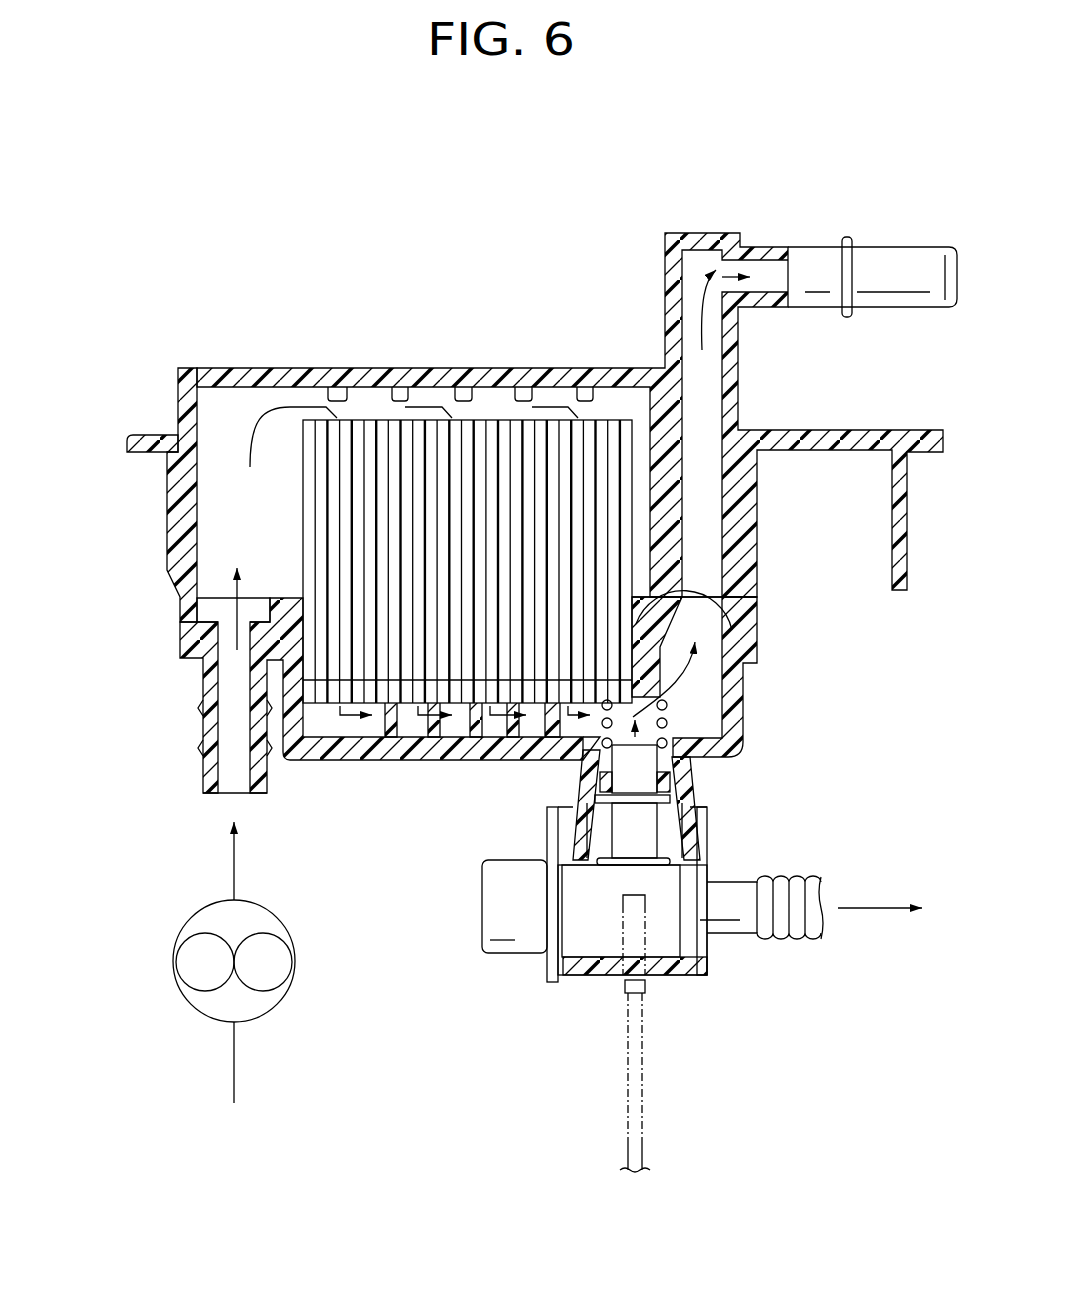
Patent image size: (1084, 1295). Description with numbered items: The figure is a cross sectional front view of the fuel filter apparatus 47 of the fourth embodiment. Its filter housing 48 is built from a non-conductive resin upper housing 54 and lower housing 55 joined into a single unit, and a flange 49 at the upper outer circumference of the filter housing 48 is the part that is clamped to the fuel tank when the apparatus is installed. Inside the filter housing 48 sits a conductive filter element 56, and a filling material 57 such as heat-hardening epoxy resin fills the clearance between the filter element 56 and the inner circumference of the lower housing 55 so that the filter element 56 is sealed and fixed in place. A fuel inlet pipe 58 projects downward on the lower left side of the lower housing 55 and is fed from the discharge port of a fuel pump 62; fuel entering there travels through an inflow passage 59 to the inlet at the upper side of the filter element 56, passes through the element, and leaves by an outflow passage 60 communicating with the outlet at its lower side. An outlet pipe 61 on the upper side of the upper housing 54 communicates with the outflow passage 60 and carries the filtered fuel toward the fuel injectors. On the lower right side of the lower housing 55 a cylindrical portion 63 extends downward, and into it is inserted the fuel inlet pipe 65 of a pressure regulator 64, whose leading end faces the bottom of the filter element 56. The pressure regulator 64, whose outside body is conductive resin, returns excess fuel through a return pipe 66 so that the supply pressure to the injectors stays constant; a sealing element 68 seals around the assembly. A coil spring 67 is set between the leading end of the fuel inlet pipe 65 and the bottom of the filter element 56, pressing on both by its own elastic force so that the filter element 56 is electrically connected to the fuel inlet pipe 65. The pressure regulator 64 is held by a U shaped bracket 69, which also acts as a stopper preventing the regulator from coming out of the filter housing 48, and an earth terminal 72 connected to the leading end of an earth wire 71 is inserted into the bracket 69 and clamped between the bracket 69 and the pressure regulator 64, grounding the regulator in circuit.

The fuel filter apparatus 47 is at (172, 298).
The filter housing 48 is at (163, 490).
The flange 49 is at (160, 436).
The upper housing 54 is at (182, 548).
The lower housing 55 is at (197, 632).
The filter element 56 is at (493, 420).
The filling material 57 is at (705, 620).
The fuel inlet pipe 58 is at (200, 732).
The inflow passage 59 is at (224, 423).
The outflow passage 60 is at (697, 706).
The outlet pipe 61 is at (878, 248).
The fuel pump 62 is at (272, 912).
The cylindrical portion 63 is at (590, 775).
The pressure regulator 64 is at (590, 928).
The fuel inlet pipe 65 is at (650, 764).
The return pipe 66 is at (730, 937).
The coil spring 67 is at (583, 764).
The sealing element 68 is at (672, 782).
The bracket 69 is at (670, 977).
The earth wire 71 is at (640, 1105).
The earth terminal 72 is at (645, 900).